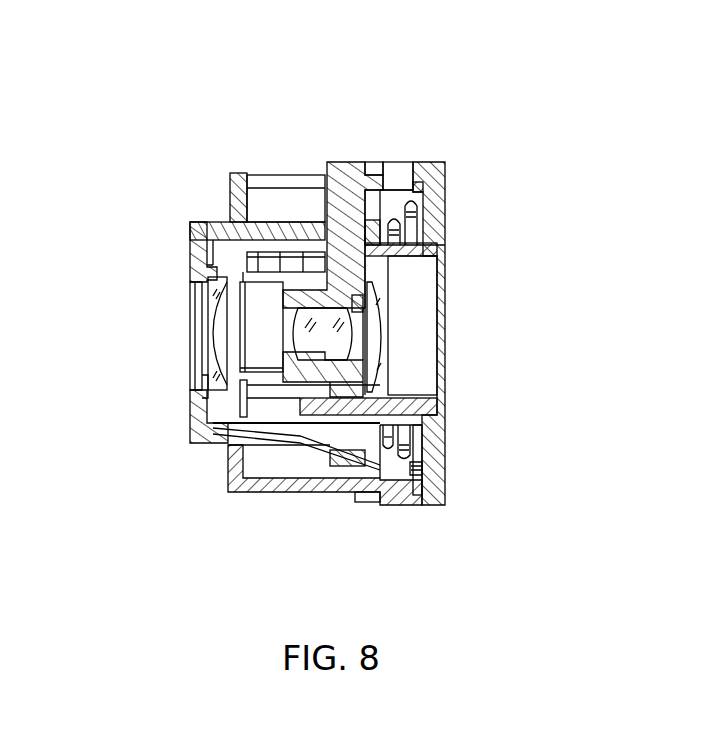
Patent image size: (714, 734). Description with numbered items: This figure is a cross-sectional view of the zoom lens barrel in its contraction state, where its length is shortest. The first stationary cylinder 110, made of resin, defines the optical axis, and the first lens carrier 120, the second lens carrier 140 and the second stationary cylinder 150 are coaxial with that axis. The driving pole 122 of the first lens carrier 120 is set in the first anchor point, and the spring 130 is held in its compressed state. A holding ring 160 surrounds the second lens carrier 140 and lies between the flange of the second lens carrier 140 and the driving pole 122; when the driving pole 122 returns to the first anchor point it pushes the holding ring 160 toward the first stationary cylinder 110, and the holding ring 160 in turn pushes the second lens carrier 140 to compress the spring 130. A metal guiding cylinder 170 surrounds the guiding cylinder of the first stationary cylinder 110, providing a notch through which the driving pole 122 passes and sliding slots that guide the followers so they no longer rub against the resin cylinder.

The first stationary cylinder 110 is at (432, 200).
The first lens carrier 120 is at (290, 294).
The driving pole 122 is at (350, 208).
The spring 130 is at (406, 200).
The second lens carrier 140 is at (207, 421).
The second stationary cylinder 150 is at (348, 487).
The holding ring 160 is at (372, 207).
The metal guiding cylinder 170 is at (217, 423).